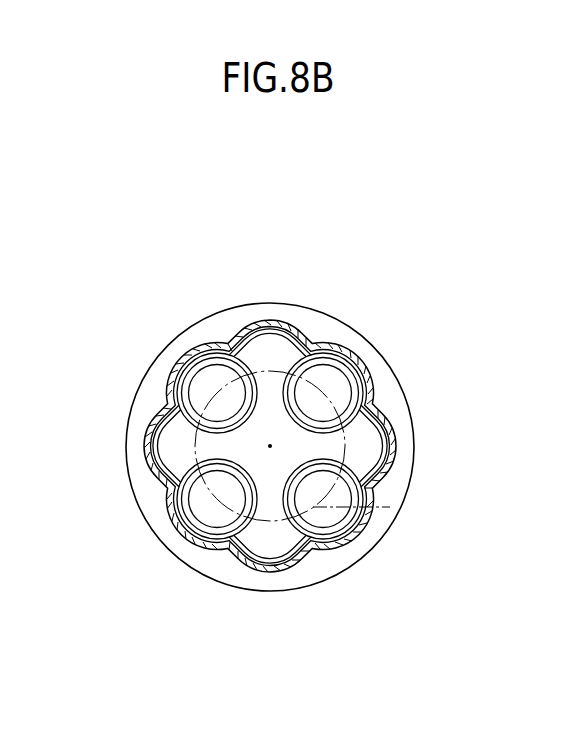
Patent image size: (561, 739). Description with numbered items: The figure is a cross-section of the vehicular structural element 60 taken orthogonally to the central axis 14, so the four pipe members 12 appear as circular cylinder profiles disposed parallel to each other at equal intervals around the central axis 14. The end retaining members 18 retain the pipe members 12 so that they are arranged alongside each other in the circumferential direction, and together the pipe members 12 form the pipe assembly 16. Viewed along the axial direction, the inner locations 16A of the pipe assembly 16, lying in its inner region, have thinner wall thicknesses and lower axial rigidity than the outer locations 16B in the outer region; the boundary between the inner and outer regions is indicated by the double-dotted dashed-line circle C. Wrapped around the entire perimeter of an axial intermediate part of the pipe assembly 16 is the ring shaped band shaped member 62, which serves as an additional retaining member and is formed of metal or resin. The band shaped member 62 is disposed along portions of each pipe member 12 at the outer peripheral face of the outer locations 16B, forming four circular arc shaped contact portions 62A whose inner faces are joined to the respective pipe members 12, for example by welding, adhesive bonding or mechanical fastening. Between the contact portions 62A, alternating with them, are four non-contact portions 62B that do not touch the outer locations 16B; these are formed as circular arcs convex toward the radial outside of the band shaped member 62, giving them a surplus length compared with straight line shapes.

The pipe member 12 is at (211, 364).
The central axis 14 is at (272, 446).
The pipe assembly 16 is at (278, 435).
The inner location 16A is at (289, 336).
The outer location 16B is at (183, 368).
The end retaining member 18 is at (230, 300).
The vehicular structural element 60 is at (302, 411).
The band shaped member 62 is at (281, 438).
The contact portion 62A is at (195, 345).
The non-contact portion 62B is at (258, 321).
The double-dotted dashed-line circle C is at (390, 507).